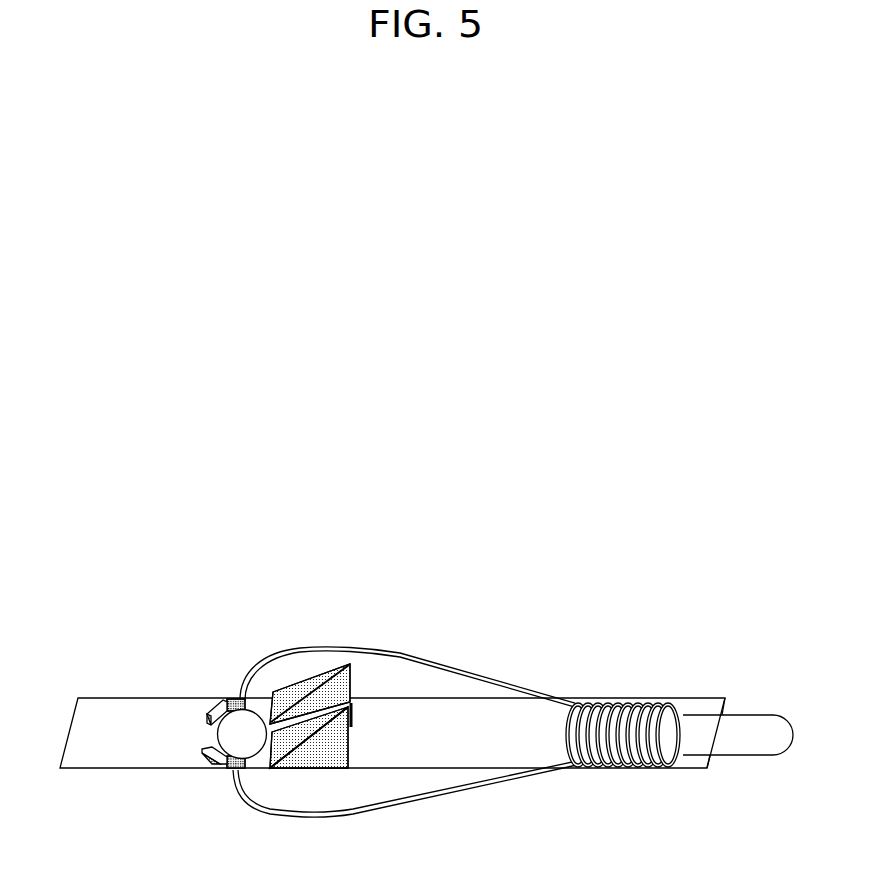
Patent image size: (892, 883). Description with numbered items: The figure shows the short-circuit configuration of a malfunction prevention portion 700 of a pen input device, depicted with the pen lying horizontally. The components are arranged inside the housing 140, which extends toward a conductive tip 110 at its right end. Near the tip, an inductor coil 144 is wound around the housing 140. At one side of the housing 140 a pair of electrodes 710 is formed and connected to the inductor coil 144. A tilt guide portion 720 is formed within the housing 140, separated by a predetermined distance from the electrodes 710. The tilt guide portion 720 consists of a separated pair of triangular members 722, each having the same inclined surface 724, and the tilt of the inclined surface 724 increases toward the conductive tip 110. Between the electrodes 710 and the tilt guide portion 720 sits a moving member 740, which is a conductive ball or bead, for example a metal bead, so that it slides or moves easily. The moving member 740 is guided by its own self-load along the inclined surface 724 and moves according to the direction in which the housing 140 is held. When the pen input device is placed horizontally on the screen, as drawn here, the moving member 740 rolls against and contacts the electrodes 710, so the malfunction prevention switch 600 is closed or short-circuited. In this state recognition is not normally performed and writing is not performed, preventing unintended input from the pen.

The malfunction prevention switch 600 is at (90, 670).
The housing 140 is at (166, 702).
The conductive tip 110 is at (755, 720).
The inductor coil 144 is at (618, 702).
The malfunction prevention portion 700 is at (296, 653).
The electrode 710 is at (220, 700).
The moving member 740 is at (238, 738).
The tilt guide portion 720 is at (364, 665).
The triangular member 722 is at (337, 750).
The inclined surface 724 is at (290, 738).